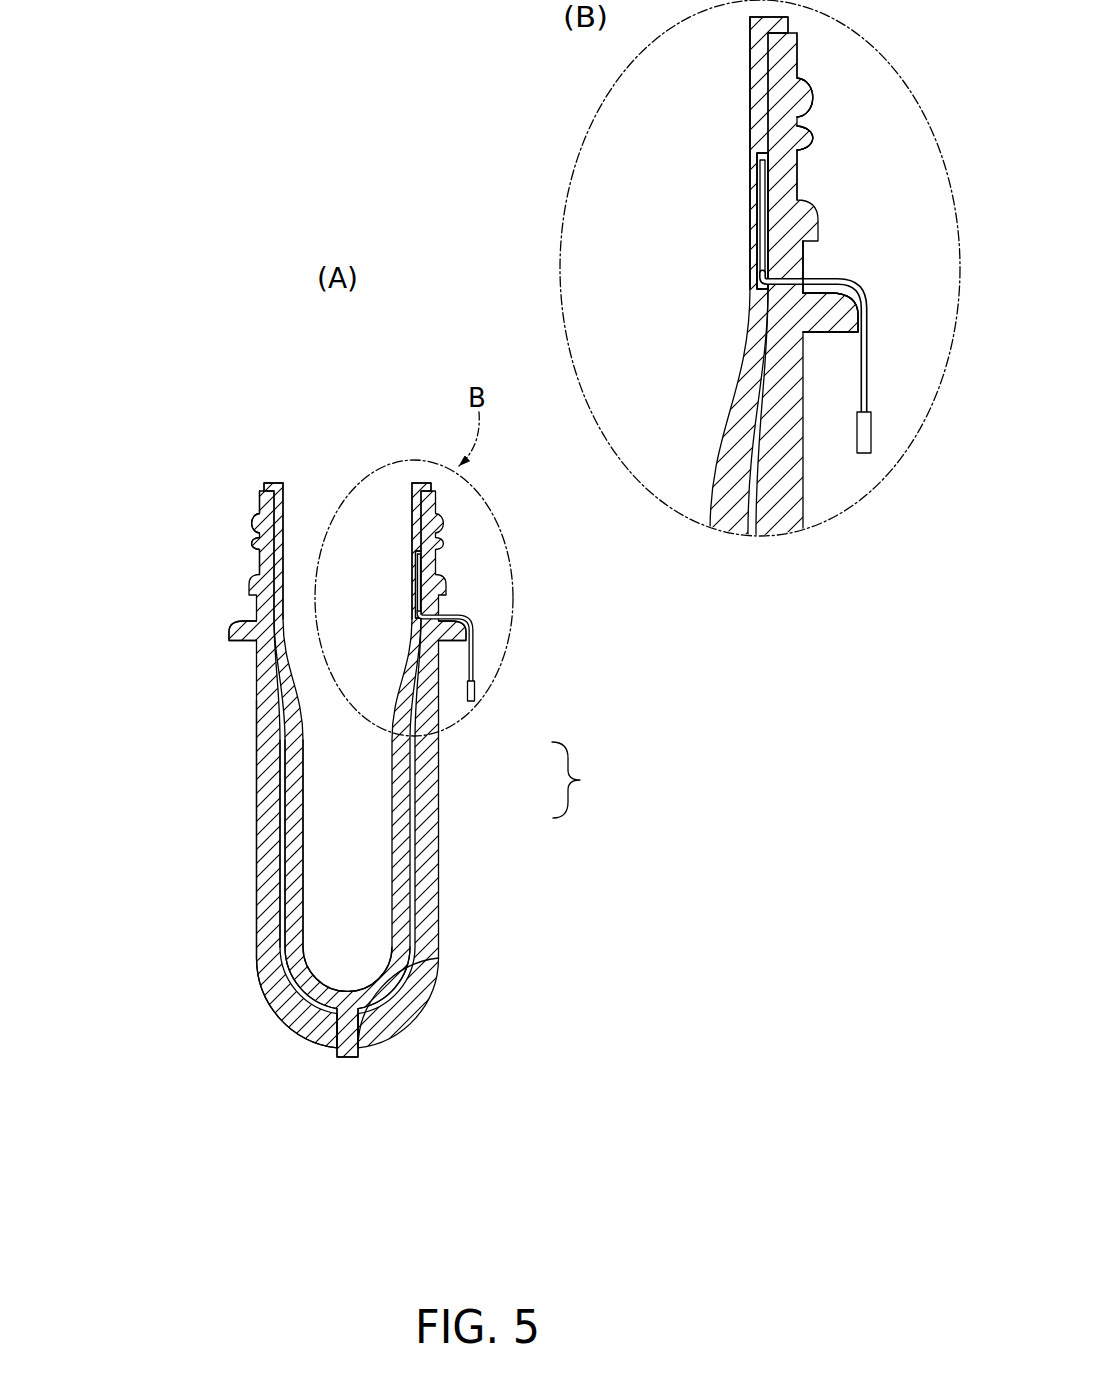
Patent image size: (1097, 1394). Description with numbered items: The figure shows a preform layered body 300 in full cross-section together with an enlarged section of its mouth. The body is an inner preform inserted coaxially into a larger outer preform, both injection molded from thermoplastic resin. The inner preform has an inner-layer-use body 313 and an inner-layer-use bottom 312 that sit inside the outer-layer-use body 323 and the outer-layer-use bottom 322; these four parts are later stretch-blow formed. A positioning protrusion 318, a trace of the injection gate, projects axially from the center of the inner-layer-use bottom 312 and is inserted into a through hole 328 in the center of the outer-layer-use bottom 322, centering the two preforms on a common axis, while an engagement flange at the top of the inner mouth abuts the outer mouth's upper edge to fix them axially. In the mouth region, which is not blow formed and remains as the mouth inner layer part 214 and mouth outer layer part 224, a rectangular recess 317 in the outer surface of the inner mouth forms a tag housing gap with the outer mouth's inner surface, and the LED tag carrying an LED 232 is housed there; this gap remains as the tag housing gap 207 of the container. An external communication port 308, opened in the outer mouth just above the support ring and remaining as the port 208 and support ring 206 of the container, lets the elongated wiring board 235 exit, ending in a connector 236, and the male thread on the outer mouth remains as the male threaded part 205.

The preform layered body 300 is at (535, 770).
The inner-layer-use body 313 is at (297, 793).
The outer-layer-use body 323 is at (267, 883).
The inner-layer-use bottom 312 is at (302, 987).
The outer-layer-use bottom 322 is at (302, 1028).
The positioning protrusion 318 is at (350, 1020).
The through hole 328 is at (348, 1052).
The rectangular recess 317 is at (770, 180).
The LED 232 is at (769, 257).
The wiring board 235 is at (858, 303).
The connector 236 is at (872, 433).
The external communication port 308 is at (806, 275).
The male threaded part 205 is at (848, 85).
The mouth outer layer part 224 is at (858, 126).
The tag housing gap 207 is at (694, 191).
The mouth inner layer part 214 is at (672, 153).
The external communication port 208 is at (876, 267).
The support ring 206 is at (830, 361).